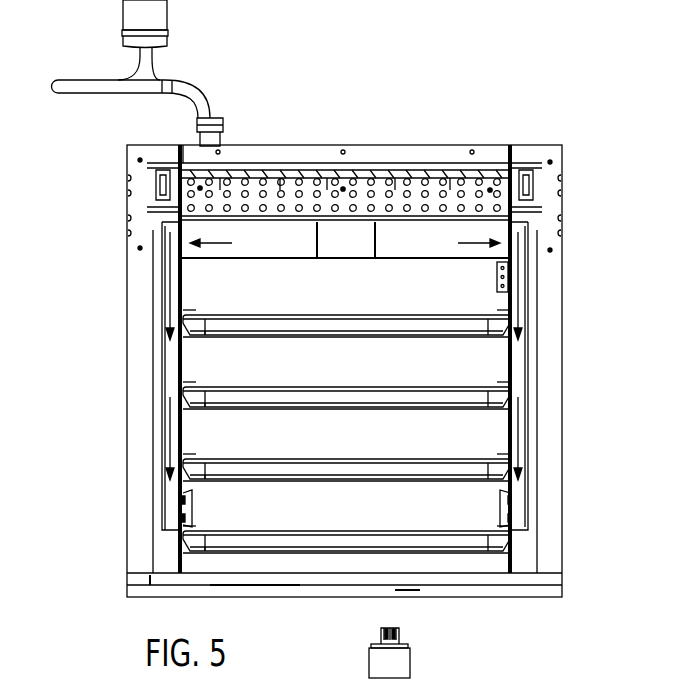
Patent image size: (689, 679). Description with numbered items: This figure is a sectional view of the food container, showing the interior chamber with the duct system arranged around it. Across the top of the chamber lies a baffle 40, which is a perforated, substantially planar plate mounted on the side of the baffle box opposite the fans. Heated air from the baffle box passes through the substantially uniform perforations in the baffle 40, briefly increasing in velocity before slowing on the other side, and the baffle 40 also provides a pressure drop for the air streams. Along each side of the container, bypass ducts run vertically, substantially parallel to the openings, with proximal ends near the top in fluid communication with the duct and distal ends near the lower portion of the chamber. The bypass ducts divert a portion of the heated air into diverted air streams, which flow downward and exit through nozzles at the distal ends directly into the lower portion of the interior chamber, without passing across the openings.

The baffle 40 is at (276, 182).